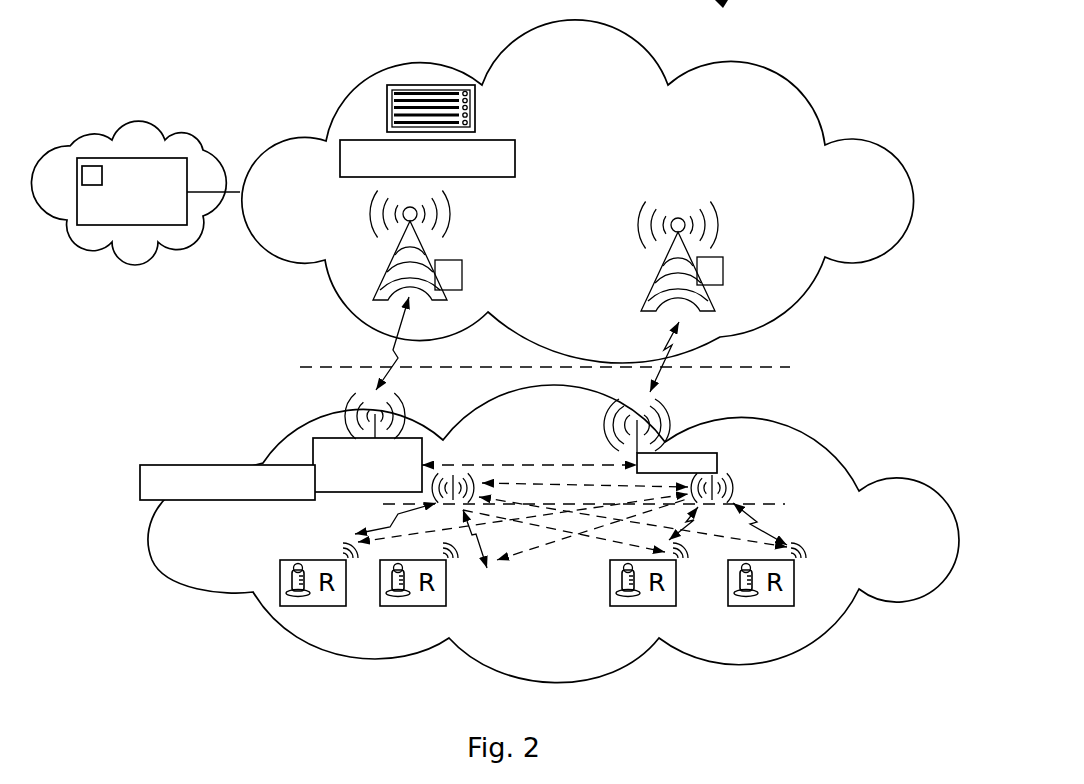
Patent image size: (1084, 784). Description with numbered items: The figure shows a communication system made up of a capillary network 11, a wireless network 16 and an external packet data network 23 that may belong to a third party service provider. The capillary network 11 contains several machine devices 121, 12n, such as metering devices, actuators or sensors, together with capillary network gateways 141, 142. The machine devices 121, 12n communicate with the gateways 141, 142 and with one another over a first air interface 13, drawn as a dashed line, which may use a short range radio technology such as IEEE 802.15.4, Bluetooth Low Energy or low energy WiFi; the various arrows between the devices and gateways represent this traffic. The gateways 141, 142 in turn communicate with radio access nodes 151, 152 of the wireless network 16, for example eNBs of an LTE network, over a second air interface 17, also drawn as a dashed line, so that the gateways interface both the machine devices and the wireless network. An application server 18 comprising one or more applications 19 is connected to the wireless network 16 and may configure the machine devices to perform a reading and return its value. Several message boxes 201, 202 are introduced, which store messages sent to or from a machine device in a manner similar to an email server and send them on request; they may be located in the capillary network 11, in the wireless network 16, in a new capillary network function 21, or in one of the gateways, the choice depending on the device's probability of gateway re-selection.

The capillary network 11 is at (902, 528).
The machine device 121 is at (317, 562).
The machine device 12n is at (780, 604).
The first air interface 13 is at (604, 495).
The capillary network gateway 141 is at (312, 457).
The capillary network gateway 142 is at (682, 463).
The radio access node 151 is at (462, 275).
The radio access node 152 is at (723, 270).
The wireless network 16 is at (868, 175).
The second air interface 17 is at (564, 368).
The application server 18 is at (172, 167).
The application 19 is at (92, 165).
The message box 201 is at (510, 167).
The message box 202 is at (140, 467).
The capillary network function 21 is at (477, 107).
The external packet data network 23 is at (195, 160).